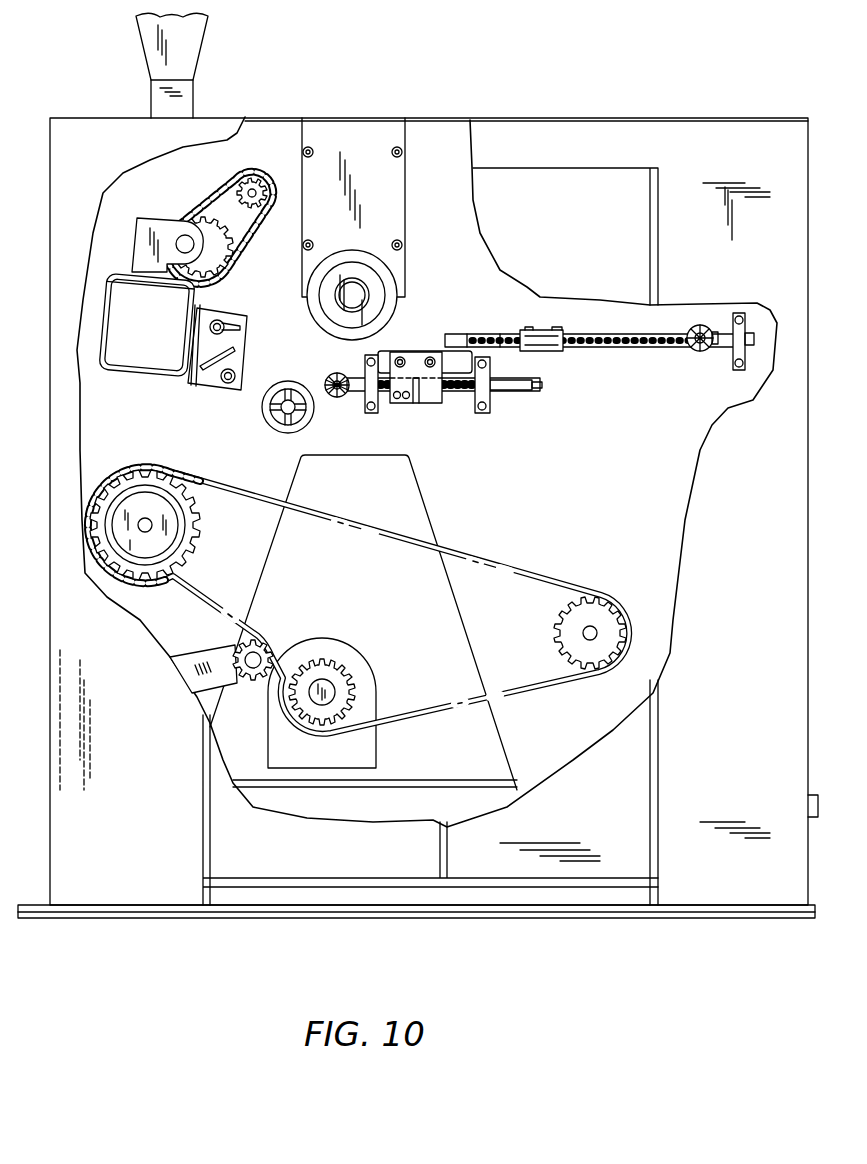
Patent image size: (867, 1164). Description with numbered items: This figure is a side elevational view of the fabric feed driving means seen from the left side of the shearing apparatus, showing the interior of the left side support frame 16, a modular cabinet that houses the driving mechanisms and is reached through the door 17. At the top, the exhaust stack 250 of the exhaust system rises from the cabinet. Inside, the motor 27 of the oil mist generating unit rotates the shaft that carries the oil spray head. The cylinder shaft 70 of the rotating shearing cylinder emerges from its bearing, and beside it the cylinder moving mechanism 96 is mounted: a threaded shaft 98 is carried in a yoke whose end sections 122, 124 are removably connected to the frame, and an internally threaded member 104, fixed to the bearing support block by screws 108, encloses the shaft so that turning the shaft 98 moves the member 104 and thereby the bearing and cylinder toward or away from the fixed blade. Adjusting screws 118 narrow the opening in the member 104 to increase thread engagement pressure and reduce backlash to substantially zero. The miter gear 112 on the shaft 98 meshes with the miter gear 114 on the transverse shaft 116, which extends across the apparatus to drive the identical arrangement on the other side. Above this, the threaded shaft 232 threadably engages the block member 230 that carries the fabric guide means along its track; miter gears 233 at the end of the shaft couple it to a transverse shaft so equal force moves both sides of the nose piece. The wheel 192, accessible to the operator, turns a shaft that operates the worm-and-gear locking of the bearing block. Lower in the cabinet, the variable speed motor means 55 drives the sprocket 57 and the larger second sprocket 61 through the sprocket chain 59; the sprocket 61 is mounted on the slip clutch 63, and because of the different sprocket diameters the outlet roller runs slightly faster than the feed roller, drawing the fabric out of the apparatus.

The left side support frame 16 is at (688, 118).
The door 17 is at (410, 870).
The motor 27 is at (139, 357).
The variable speed motor means 55 is at (350, 653).
The sprocket 57 is at (556, 623).
The sprocket chain 59 is at (490, 569).
The second sprocket 61 is at (172, 466).
The slip clutch 63 is at (120, 496).
The cylinder shaft 70 is at (352, 293).
The cylinder moving mechanism 96 is at (431, 411).
The threaded shaft 98 is at (457, 393).
The threaded member 104 is at (412, 352).
The screws 108 is at (400, 359).
The miter gear 112 is at (347, 379).
The miter gear 114 is at (331, 380).
The transverse shaft 116 is at (343, 393).
The adjusting screws 118 is at (397, 400).
The yoke end section 122 is at (483, 395).
The yoke end section 124 is at (370, 397).
The wheel 192 is at (264, 413).
The block member 230 is at (548, 350).
The threaded shaft 232 is at (486, 336).
The miter gears 233 is at (711, 323).
The exhaust stack 250 is at (183, 62).